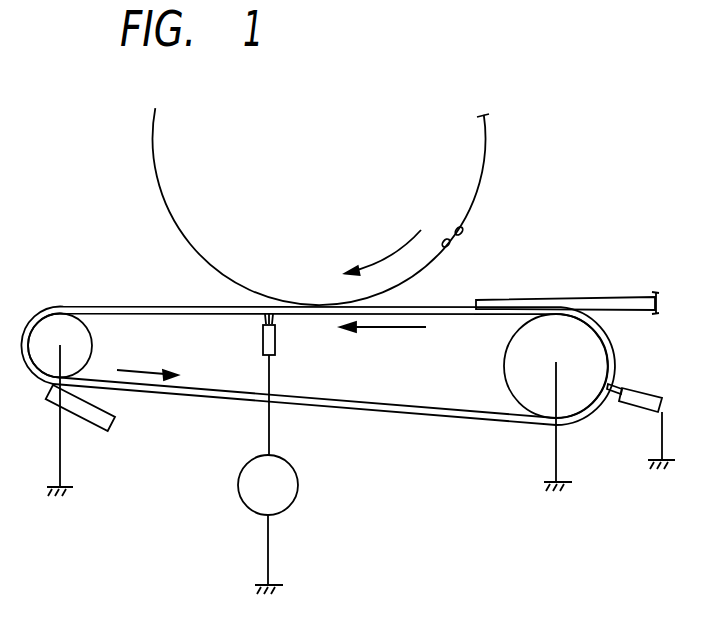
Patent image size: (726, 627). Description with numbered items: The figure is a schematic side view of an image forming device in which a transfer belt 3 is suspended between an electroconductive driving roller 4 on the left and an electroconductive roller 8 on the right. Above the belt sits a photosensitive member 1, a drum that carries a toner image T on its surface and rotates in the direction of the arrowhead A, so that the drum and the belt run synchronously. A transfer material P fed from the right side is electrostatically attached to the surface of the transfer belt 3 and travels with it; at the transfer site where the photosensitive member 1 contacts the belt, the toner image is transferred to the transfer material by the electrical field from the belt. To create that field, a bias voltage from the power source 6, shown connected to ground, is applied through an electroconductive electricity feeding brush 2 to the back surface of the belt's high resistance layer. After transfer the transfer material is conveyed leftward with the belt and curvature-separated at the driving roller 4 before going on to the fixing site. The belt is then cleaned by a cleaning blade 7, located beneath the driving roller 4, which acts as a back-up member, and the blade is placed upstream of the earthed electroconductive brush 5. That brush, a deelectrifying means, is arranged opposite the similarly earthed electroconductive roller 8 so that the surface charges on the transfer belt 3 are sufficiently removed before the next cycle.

The photosensitive member 1 is at (483, 142).
The electroconductive electricity feeding brush 2 is at (275, 338).
The transfer belt 3 is at (346, 408).
The electroconductive driving roller 4 is at (92, 340).
The electroconductive brush 5 is at (648, 392).
The power source 6 is at (298, 497).
The cleaning blade 7 is at (107, 433).
The electroconductive roller 8 is at (531, 398).
The toner image T is at (463, 232).
The drum rotation direction A is at (383, 248).
The transfer material P is at (631, 297).